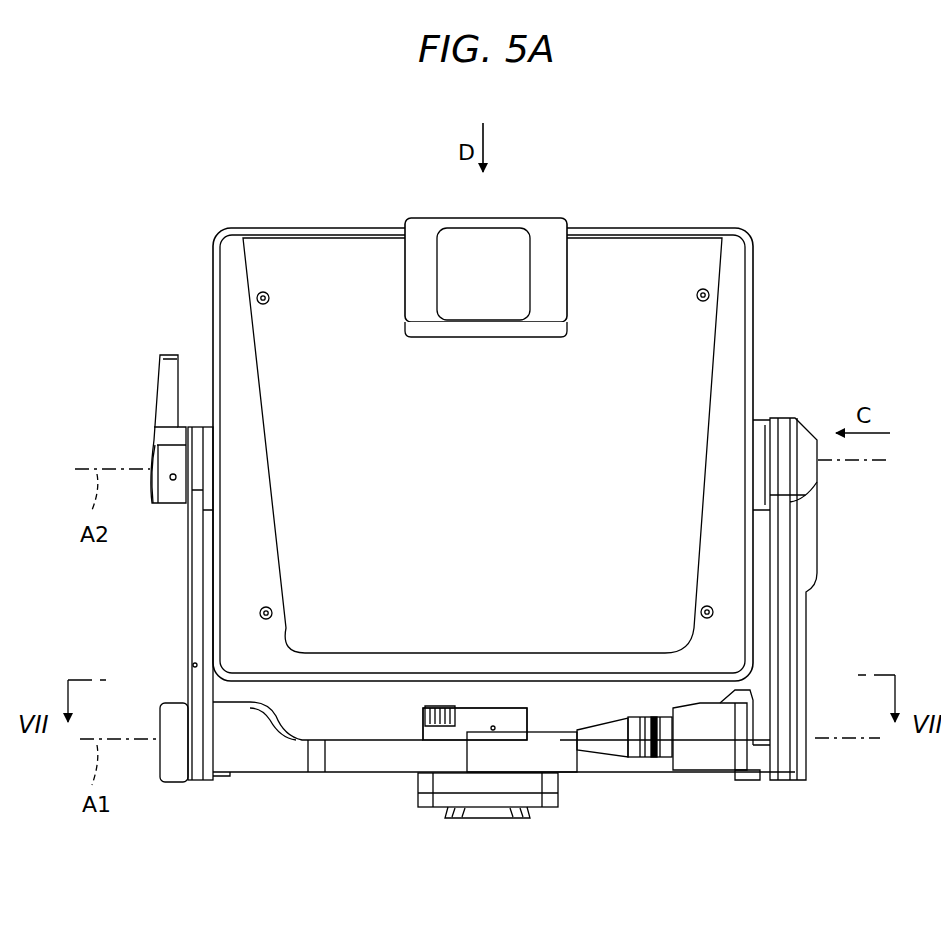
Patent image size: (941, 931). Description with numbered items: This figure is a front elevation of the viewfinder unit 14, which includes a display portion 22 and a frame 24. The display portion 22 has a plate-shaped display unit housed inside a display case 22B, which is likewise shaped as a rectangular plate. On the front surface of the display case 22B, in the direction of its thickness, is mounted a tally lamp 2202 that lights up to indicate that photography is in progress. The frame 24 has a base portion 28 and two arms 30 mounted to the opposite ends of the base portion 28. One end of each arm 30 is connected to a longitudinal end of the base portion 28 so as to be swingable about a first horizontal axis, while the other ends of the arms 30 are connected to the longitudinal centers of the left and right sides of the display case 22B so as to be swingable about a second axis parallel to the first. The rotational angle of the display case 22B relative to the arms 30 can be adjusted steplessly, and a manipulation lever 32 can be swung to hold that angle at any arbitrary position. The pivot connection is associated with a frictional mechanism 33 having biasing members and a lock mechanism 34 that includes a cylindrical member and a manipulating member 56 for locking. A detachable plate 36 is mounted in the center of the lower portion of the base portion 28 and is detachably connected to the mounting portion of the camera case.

The viewfinder unit 14 is at (298, 192).
The display portion 22 is at (735, 218).
The display case 22B is at (735, 330).
The tally lamp 2202 is at (502, 238).
The arms 30 is at (188, 602).
The manipulation lever 32 is at (160, 367).
The frictional mechanism 33 is at (495, 763).
The lock mechanism 34 is at (475, 724).
The frame 24 is at (246, 786).
The base portion 28 is at (290, 762).
The detachable plate 36 is at (560, 795).
The manipulating member 56 is at (497, 706).